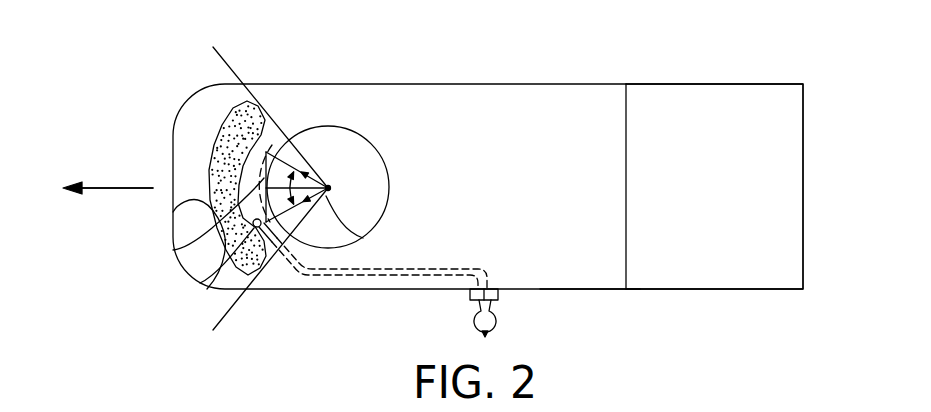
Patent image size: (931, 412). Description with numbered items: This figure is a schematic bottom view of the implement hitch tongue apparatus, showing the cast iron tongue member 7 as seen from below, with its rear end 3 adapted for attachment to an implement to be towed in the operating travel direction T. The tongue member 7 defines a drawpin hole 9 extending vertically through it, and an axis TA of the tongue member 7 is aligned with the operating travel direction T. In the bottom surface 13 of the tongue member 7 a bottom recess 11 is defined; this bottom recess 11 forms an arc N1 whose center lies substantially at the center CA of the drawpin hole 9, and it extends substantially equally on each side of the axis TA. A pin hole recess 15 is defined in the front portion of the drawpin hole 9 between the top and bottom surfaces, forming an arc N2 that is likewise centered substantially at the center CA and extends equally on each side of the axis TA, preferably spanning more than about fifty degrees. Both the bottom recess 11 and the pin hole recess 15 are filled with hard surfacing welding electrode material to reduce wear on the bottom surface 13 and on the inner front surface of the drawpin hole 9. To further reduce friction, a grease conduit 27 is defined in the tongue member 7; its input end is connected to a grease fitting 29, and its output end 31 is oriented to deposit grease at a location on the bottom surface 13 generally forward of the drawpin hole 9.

The rear end 3 is at (720, 84).
The tongue member 7 is at (510, 84).
The drawpin hole 9 is at (362, 152).
The bottom recess 11 is at (173, 213).
The bottom surface 13 is at (560, 268).
The pin hole recess 15 is at (277, 163).
The grease conduit 27 is at (403, 278).
The grease fitting 29 is at (496, 321).
The output end 31 is at (200, 283).
The center of the drawpin hole CA is at (328, 188).
The arc of the bottom recess N1 is at (363, 238).
The arc of the pin hole recess N2 is at (177, 248).
The operating travel direction T is at (97, 188).
The axis of the tongue member TA is at (118, 183).